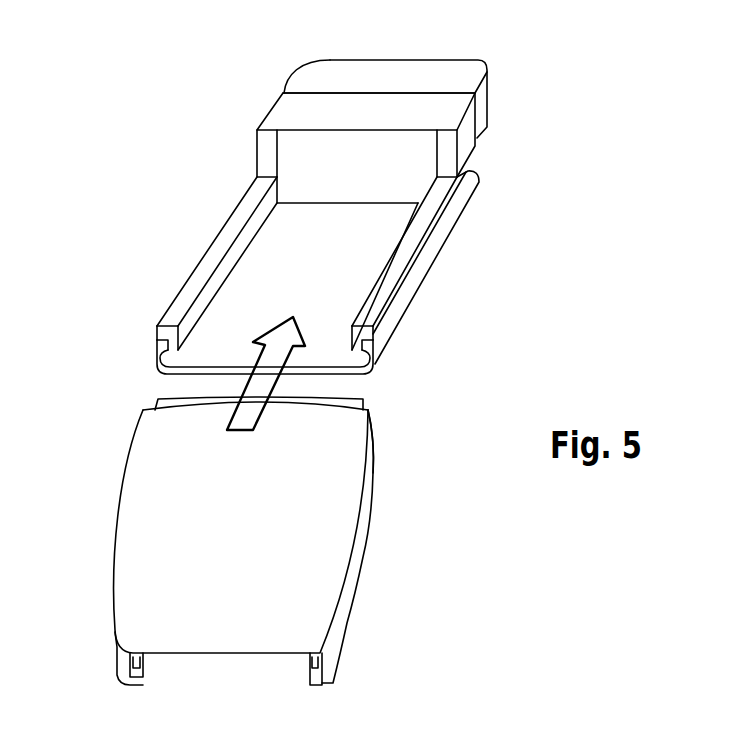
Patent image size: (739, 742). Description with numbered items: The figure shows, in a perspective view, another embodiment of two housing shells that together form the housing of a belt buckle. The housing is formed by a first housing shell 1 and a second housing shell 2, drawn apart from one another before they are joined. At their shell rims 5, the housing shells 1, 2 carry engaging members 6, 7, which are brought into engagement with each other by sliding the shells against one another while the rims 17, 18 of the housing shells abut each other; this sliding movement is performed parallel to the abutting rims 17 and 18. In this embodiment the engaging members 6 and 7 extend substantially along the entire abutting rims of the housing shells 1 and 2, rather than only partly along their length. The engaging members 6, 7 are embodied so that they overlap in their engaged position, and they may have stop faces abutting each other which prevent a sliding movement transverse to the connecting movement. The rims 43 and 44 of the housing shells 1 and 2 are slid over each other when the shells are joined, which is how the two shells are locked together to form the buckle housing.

The housing shell 1 is at (228, 617).
The housing shell 2 is at (363, 243).
The shell rim 5 is at (183, 285).
The engaging member 6 is at (137, 663).
The engaging member 7 is at (163, 342).
The rim 17 is at (363, 577).
The rim 18 is at (168, 310).
The rim 43 is at (355, 401).
The rim 44 is at (352, 133).